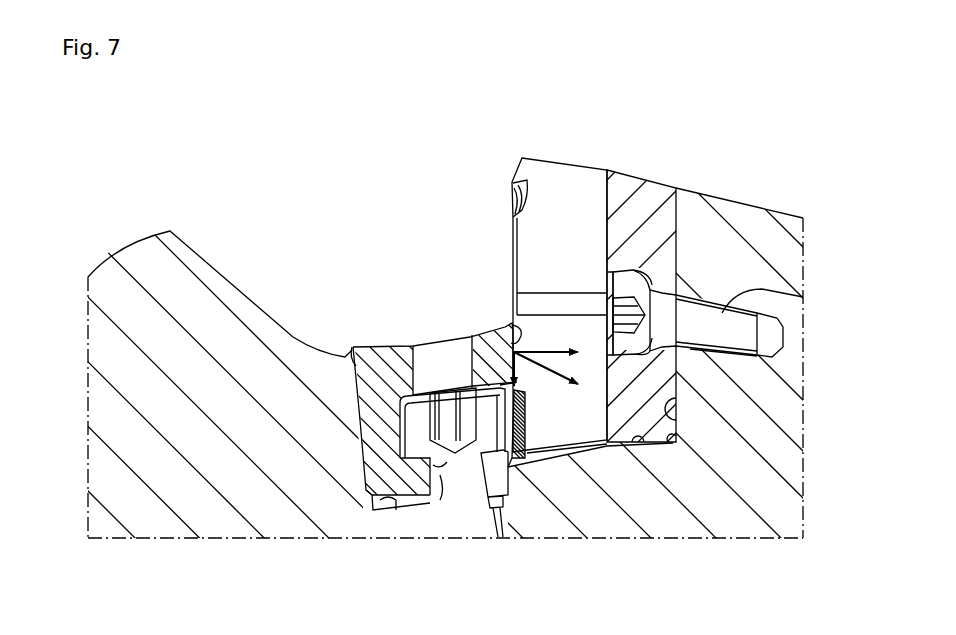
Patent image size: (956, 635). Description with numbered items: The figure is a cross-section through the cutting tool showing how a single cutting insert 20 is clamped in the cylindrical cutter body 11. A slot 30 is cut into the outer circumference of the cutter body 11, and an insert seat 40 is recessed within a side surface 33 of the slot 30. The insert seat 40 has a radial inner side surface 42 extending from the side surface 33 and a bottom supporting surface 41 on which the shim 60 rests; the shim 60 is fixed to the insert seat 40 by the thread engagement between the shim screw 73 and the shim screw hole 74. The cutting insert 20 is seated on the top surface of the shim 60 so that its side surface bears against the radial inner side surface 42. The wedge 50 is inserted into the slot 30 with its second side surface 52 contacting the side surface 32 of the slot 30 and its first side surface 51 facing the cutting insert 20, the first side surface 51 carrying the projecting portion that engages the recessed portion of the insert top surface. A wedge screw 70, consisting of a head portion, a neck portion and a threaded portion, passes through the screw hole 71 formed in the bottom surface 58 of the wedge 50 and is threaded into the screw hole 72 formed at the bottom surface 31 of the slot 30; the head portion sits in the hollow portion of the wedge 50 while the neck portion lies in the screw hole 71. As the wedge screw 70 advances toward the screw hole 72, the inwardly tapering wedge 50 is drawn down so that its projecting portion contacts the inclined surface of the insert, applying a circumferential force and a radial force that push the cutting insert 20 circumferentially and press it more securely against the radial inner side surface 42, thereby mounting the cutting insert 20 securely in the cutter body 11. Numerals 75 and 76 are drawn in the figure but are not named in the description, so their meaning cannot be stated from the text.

The cutter body 11 is at (189, 262).
The cutting insert 20 is at (562, 155).
The slot 30 is at (397, 254).
The bottom surface of the slot 31 is at (406, 503).
The side surface of the slot 32 is at (371, 489).
The side surface of the slot 33 is at (532, 488).
The insert seat 40 is at (680, 186).
The bottom supporting surface 41 is at (690, 420).
The radial inner side surface 42 is at (641, 496).
The wedge 50 is at (378, 342).
The first side surface of the wedge 51 is at (511, 325).
The second side surface of the wedge 52 is at (341, 355).
The bottom surface of the wedge 58 is at (395, 509).
The shim 60 is at (638, 168).
The wedge screw 70 is at (484, 506).
The screw hole of the wedge 71 is at (448, 520).
The screw hole of the slot 72 is at (514, 524).
The shim screw 73 is at (722, 316).
The shim screw hole 74 is at (672, 280).
The bolt thread 75 is at (737, 360).
The slot in wedge 76 is at (535, 304).